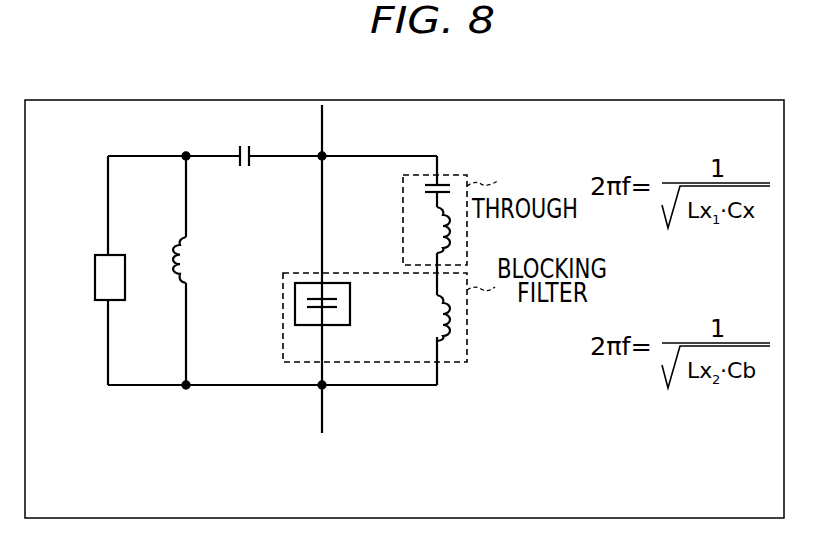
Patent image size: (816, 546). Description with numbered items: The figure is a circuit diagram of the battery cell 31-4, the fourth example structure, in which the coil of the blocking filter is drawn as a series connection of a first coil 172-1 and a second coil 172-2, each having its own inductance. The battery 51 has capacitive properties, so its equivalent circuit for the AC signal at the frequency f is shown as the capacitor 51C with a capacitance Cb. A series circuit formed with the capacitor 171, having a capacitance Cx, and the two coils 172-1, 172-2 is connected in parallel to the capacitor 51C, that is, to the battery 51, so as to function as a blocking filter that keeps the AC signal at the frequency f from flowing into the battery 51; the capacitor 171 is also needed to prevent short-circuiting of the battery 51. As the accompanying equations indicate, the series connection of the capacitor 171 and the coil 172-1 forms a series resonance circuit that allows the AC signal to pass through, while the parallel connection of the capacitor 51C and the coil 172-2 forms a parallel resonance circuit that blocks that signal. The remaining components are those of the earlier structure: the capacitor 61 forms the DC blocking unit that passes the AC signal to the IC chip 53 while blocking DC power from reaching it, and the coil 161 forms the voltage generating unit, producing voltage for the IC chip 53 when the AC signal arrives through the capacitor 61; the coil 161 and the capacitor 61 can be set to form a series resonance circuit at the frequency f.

The IC chip 53 is at (95, 278).
The coil 161 is at (182, 242).
The capacitor 61 is at (243, 171).
The battery 51 is at (289, 279).
The capacitor 51C is at (308, 283).
The capacitor 171 is at (425, 189).
The coil 172-1 is at (437, 243).
The coil 172-2 is at (437, 320).
The battery cell 31-4 is at (145, 438).